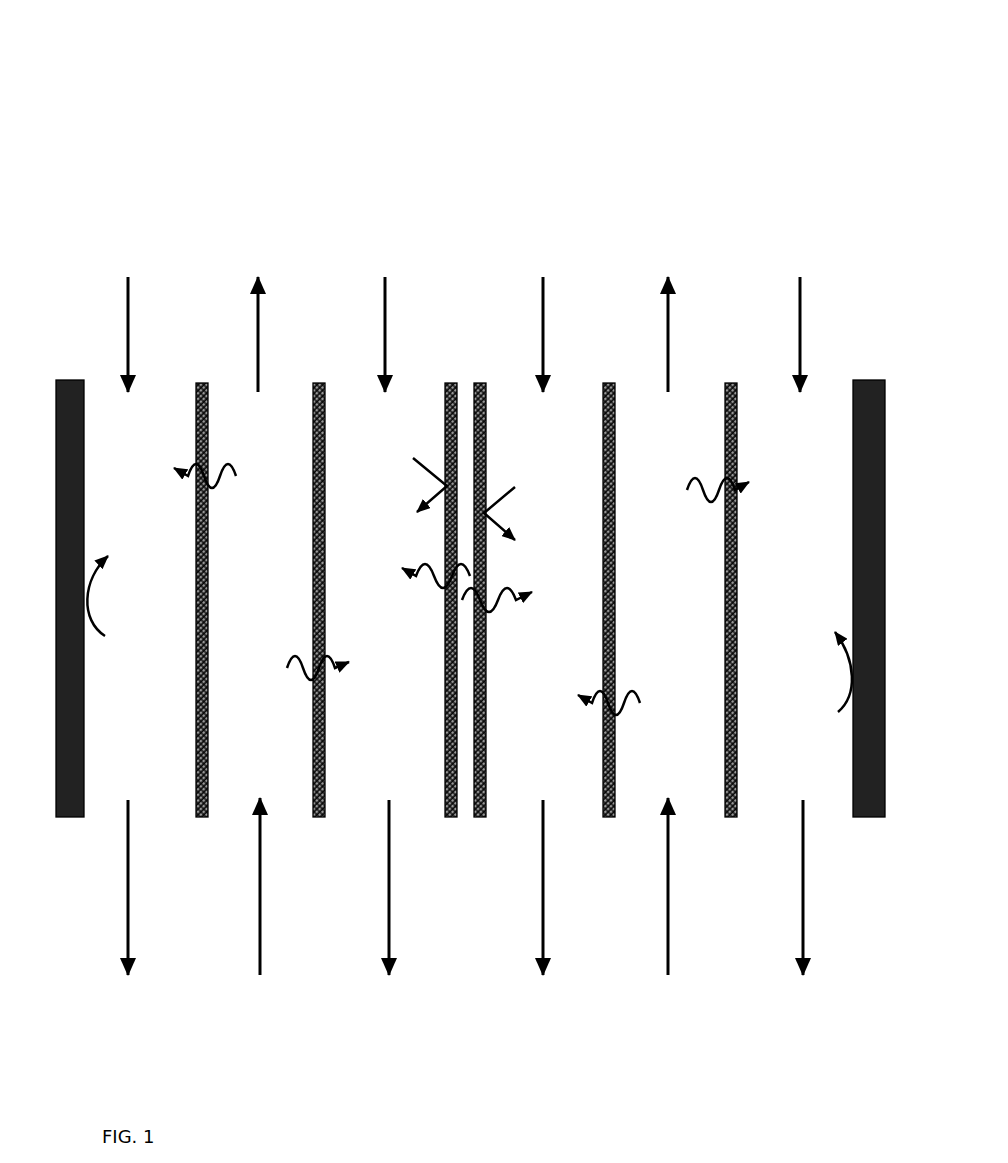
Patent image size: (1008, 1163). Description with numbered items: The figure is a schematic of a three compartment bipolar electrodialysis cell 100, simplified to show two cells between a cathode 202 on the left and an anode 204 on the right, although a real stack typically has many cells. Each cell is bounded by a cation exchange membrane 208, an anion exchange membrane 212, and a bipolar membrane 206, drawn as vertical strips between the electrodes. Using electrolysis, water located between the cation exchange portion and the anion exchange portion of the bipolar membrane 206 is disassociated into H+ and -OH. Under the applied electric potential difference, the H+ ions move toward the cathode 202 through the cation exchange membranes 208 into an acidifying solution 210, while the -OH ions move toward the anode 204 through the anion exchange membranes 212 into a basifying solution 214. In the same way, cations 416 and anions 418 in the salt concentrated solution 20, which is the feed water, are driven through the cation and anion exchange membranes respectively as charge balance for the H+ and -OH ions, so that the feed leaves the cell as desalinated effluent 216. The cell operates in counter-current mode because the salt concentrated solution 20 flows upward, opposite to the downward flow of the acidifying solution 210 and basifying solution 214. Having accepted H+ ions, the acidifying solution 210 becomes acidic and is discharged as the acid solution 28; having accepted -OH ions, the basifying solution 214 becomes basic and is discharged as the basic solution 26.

The three compartment bipolar electrodialysis cell 100 is at (340, 162).
The cathode 202 is at (55, 718).
The anode 204 is at (886, 740).
The bipolar membrane 206 is at (467, 654).
The cation exchange membrane 208 is at (402, 660).
The acidifying solution 210 is at (592, 294).
The anion exchange membrane 212 is at (530, 660).
The basifying solution 214 is at (335, 294).
The desalinated effluent 216 is at (462, 293).
The salt concentrated solution 20 is at (465, 940).
The basic solution 26 is at (335, 927).
The acid solution 28 is at (595, 926).
The cation 416 is at (437, 589).
The anion 418 is at (498, 577).